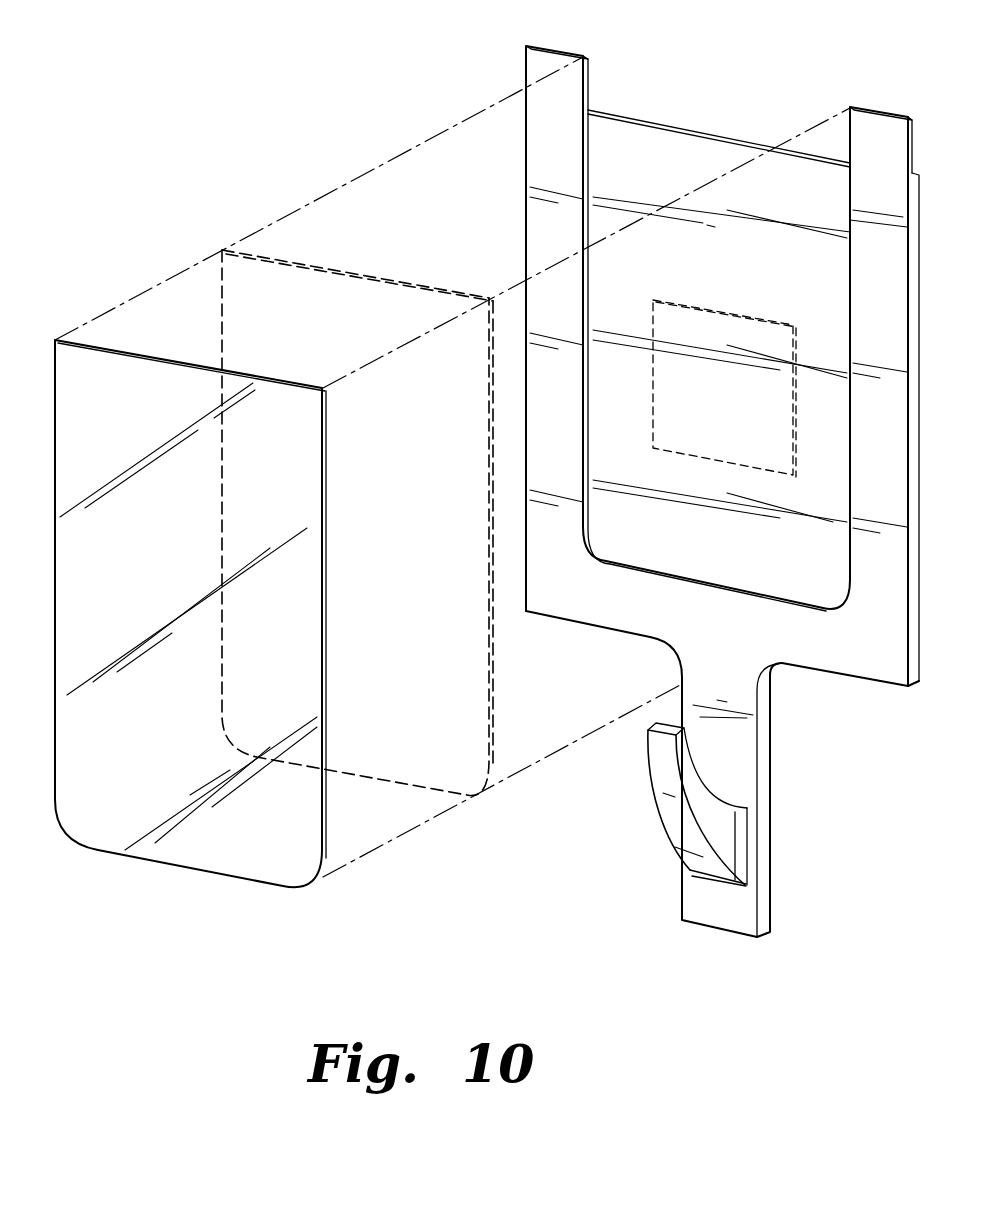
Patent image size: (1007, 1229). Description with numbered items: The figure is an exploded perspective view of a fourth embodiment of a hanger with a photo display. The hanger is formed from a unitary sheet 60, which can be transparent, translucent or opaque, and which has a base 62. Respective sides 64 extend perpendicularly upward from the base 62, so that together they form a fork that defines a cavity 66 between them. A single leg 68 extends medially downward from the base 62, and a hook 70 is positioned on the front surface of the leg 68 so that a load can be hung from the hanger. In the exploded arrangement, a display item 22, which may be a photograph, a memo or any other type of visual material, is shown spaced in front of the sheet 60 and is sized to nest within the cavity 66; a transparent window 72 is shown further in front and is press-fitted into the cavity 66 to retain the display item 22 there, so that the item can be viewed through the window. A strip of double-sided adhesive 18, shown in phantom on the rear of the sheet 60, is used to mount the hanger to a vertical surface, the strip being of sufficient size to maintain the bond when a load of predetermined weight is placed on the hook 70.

The double-sided adhesive strip 18 is at (730, 315).
The display item 22 is at (390, 277).
The unitary sheet 60 is at (377, 77).
The base 62 is at (853, 660).
The sides 64 is at (537, 112).
The cavity 66 is at (807, 571).
The leg 68 is at (741, 791).
The hook 70 is at (676, 822).
The transparent window 72 is at (276, 845).